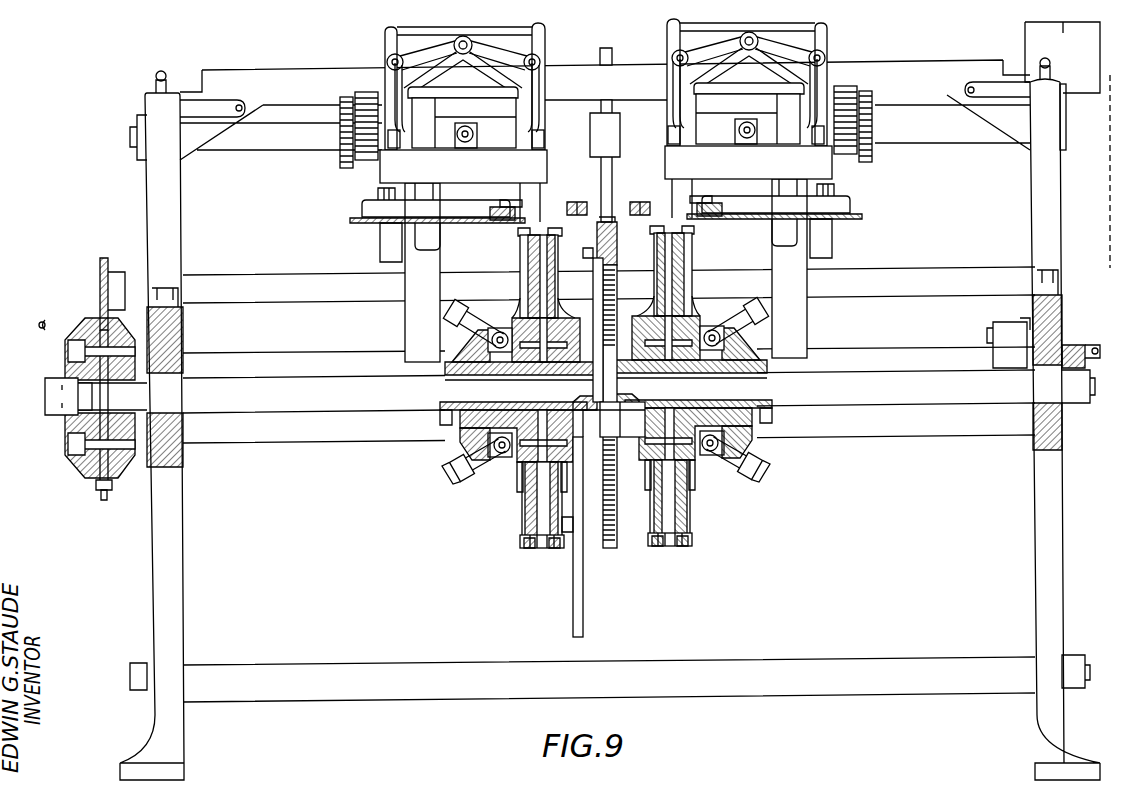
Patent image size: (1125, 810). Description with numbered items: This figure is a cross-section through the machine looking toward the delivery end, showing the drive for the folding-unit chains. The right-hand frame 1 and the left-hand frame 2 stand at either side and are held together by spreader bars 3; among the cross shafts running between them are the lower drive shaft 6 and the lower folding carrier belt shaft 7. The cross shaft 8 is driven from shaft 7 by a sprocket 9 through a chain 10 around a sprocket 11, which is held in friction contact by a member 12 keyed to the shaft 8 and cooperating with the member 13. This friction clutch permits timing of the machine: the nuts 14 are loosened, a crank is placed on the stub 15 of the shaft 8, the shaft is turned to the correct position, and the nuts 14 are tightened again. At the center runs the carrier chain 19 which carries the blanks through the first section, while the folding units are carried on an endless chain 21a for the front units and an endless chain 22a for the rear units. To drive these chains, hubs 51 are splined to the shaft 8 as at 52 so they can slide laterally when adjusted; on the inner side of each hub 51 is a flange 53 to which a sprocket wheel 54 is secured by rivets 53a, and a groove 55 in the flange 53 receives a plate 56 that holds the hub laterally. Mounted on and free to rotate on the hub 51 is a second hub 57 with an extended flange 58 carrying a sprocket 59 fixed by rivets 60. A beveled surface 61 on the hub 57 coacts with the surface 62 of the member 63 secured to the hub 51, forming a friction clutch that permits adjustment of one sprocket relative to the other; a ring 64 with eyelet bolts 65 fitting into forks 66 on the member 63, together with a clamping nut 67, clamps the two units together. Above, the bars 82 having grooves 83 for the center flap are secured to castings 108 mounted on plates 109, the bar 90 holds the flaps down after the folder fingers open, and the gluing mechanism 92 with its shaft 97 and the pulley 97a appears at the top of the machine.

The right-hand frame 1 is at (1048, 562).
The left-hand frame 2 is at (170, 572).
The spreader bars 3 is at (905, 420).
The lower drive shaft 6 is at (935, 355).
The lower folding carrier belt shaft 7 is at (267, 287).
The cross shaft 8 is at (283, 395).
The sprocket 9 is at (98, 274).
The chain 10 is at (98, 490).
The sprocket 11 is at (104, 500).
The friction member 12 is at (128, 343).
The cooperating clutch member 13 is at (80, 467).
The nuts 14 is at (68, 345).
The stub 15 is at (60, 400).
The carrier chain 19 is at (612, 215).
The endless chain 21a is at (672, 553).
The endless chain 22a is at (712, 553).
The hub 51 is at (450, 418).
The spline 52 is at (448, 408).
The flange 53 is at (582, 400).
The rivets 53a is at (625, 402).
The sprocket wheel 54 is at (551, 232).
The groove 55 is at (617, 300).
The plate 56 is at (526, 500).
The second hub 57 is at (545, 376).
The extended flange 58 is at (520, 330).
The sprocket 59 is at (536, 228).
The rivets 60 is at (498, 402).
The beveled surface 61 is at (462, 377).
The coacting surface 62 is at (462, 345).
The clutch member 63 is at (468, 458).
The ring 64 is at (518, 478).
The eyelet bolts 65 is at (465, 305).
The forks 66 is at (462, 482).
The clamping nut 67 is at (452, 305).
The bars 82 is at (503, 222).
The grooves 83 is at (510, 207).
The bar 90 is at (588, 196).
The gluing mechanism 92 is at (606, 164).
The shaft 97 is at (240, 150).
The pulley 97a is at (608, 64).
The castings 108 is at (445, 212).
The plates 109 is at (362, 222).